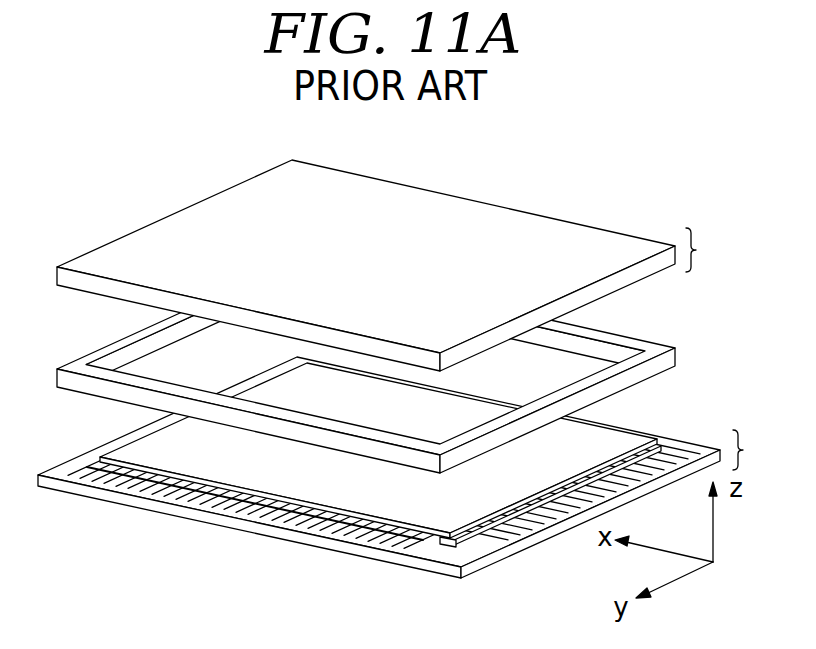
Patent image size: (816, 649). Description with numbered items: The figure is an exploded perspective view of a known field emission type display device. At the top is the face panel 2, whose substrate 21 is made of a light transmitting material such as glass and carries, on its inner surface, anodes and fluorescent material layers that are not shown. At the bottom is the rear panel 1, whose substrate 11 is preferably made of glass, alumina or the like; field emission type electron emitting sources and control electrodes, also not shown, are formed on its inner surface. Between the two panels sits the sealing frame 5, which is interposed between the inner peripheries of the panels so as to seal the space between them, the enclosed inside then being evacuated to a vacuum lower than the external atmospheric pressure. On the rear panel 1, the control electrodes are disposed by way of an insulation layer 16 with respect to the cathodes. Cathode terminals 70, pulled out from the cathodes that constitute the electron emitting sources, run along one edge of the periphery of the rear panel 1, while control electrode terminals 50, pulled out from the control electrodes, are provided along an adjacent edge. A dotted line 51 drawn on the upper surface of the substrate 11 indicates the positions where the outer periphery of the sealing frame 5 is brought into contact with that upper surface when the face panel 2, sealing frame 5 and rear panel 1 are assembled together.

The rear panel 1 is at (403, 491).
The face panel 2 is at (393, 256).
The sealing frame 5 is at (679, 348).
The substrate 11 is at (372, 557).
The insulation layer 16 is at (137, 447).
The substrate 21 is at (483, 218).
The control electrode terminals 50 is at (488, 543).
The dotted line 51 is at (447, 547).
The cathode terminals 70 is at (133, 488).